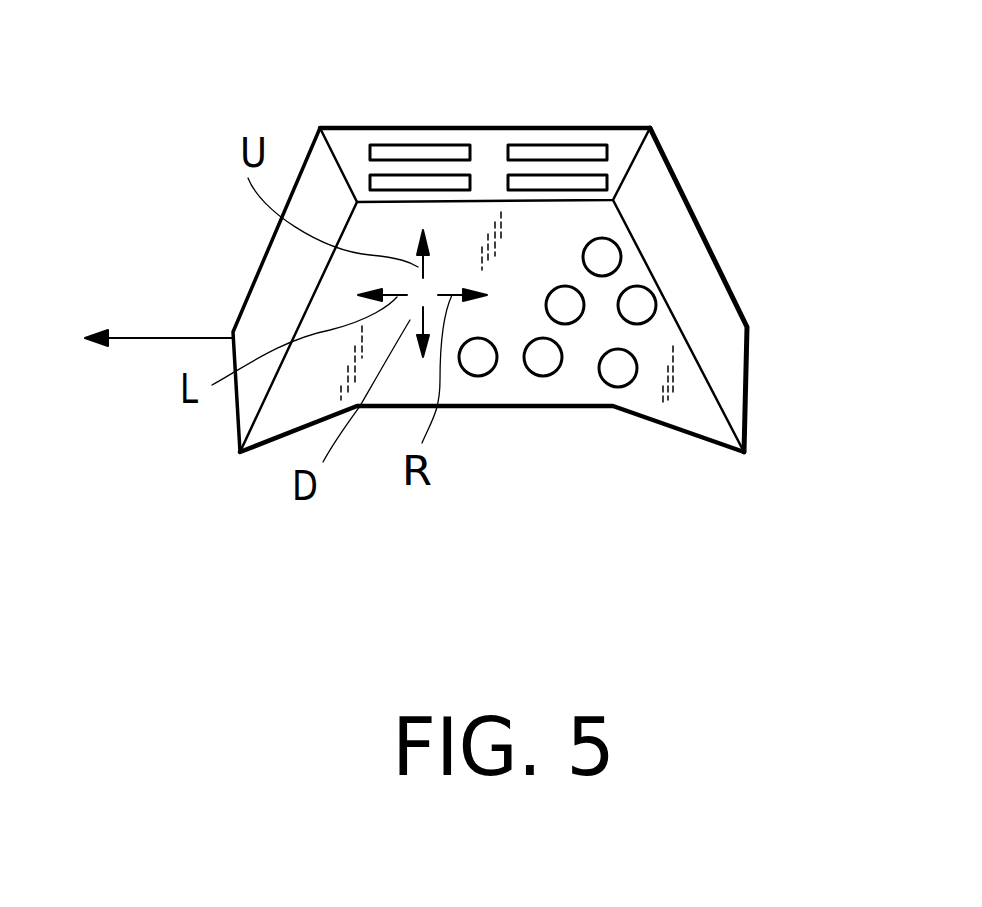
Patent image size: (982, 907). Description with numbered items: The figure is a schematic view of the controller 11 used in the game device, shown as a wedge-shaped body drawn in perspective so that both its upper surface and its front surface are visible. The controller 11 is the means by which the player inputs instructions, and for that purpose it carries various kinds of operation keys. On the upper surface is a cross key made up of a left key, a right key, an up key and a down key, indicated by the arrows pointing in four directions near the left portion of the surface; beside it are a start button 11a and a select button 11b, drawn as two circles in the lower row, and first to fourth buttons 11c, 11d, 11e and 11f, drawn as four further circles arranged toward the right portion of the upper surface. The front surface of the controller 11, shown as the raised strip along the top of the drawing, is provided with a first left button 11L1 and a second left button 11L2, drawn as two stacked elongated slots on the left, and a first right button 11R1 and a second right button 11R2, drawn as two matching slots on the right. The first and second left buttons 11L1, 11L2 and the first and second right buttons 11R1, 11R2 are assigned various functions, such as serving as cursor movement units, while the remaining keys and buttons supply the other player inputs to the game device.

The controller 11 is at (257, 272).
The first left button 11L1 is at (373, 146).
The second left button 11L2 is at (397, 180).
The first right button 11R1 is at (603, 172).
The second right button 11R2 is at (562, 145).
The start button 11a is at (482, 370).
The select button 11b is at (550, 362).
The first button 11c is at (557, 287).
The second button 11d is at (603, 252).
The third button 11e is at (620, 367).
The fourth button 11f is at (645, 303).